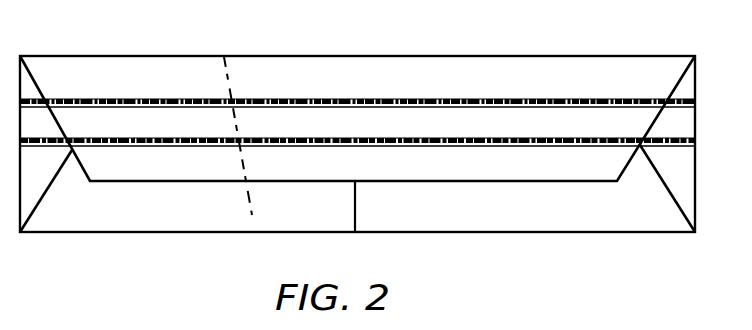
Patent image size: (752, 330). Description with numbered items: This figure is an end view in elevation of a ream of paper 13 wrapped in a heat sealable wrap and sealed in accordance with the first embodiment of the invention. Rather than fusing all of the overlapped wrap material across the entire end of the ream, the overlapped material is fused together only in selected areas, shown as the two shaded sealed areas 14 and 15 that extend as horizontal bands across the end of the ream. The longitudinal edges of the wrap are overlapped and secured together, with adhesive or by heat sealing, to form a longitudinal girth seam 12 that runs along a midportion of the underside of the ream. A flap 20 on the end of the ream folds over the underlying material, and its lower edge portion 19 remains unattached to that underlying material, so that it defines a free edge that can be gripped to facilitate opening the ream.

The longitudinal girth seam 12 is at (355, 218).
The wrapped and sealed ream of paper 13 is at (178, 247).
The sealed area 14 is at (433, 99).
The sealed area 15 is at (314, 142).
The lower edge portion 19 is at (462, 186).
The flap 20 is at (224, 57).